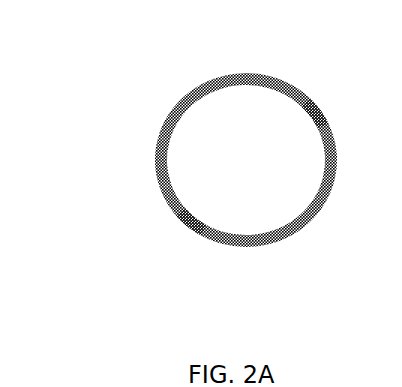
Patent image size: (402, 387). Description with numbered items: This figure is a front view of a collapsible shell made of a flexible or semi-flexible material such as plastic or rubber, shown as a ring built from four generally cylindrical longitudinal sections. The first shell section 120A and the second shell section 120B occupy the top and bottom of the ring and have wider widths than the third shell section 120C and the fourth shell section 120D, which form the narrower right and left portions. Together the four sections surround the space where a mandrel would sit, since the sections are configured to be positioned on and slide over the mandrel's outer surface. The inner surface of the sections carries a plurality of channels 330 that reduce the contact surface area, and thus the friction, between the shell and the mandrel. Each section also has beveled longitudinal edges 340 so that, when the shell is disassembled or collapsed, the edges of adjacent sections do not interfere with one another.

The first shell section 120A is at (209, 79).
The second shell section 120B is at (223, 247).
The third shell section 120C is at (339, 176).
The fourth shell section 120D is at (151, 163).
The channels 330 is at (297, 105).
The beveled longitudinal edges 340 is at (172, 199).